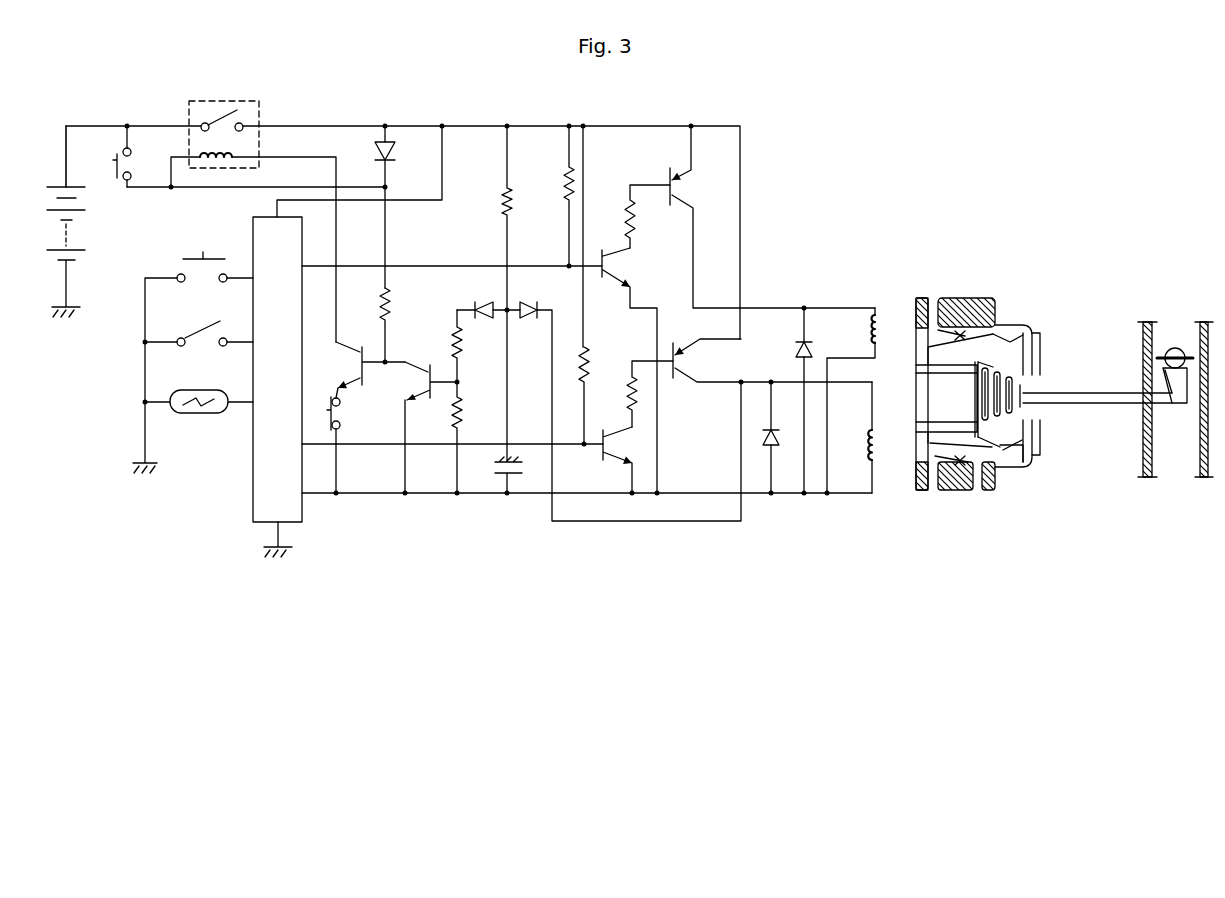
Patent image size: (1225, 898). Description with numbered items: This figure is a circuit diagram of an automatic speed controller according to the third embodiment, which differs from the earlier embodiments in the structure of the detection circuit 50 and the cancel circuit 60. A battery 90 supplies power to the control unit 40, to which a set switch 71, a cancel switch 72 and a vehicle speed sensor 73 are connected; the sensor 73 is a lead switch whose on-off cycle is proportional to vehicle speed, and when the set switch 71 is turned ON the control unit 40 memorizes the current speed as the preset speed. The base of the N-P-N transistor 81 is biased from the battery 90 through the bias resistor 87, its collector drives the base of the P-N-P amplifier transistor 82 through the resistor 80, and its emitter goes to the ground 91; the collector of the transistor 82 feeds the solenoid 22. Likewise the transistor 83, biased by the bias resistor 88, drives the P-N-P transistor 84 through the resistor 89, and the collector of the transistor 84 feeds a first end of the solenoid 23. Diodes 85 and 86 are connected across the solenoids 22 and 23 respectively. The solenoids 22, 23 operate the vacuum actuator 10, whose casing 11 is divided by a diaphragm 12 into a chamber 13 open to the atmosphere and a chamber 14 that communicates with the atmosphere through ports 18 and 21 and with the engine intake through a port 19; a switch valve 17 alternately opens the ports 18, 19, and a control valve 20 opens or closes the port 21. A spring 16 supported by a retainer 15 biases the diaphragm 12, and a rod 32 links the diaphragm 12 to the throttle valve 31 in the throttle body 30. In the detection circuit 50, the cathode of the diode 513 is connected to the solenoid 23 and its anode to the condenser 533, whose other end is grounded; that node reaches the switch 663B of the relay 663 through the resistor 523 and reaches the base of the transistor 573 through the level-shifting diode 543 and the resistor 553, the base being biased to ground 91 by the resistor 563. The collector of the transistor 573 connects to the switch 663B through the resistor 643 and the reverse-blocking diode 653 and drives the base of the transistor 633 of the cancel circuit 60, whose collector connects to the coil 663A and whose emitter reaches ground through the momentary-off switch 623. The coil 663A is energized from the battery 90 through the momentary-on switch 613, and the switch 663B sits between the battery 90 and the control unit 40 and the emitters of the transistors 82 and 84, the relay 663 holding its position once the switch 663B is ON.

The actuator 10 is at (1031, 383).
The casing 11 is at (1018, 325).
The diaphragm 12 is at (1030, 452).
The chamber 13 is at (1038, 340).
The chamber 14 is at (1003, 452).
The retainer 15 is at (973, 393).
The spring 16 is at (1000, 418).
The switch valve 17 is at (992, 492).
The port 18 is at (930, 492).
The port 19 is at (976, 492).
The control valve 20 is at (912, 355).
The port 21 is at (935, 298).
The solenoid 22 is at (882, 320).
The solenoid 23 is at (890, 455).
The throttle body 30 is at (1205, 452).
The throttle valve 31 is at (1172, 346).
The rod 32 is at (1115, 405).
The control unit 40 is at (252, 495).
The detection circuit 50 is at (478, 509).
The cancel circuit 60 is at (320, 99).
The set switch 71 is at (192, 257).
The cancel switch 72 is at (196, 330).
The vehicle speed sensor 73 is at (187, 413).
The resistor 80 is at (628, 205).
The N-P-N type transistor 81 is at (613, 288).
The P-N-P type transistor 82 is at (683, 208).
The N-P-N type transistor 83 is at (615, 456).
The P-N-P type transistor 84 is at (694, 385).
The diode 85 is at (812, 352).
The diode 86 is at (767, 450).
The bias resistor 87 is at (563, 175).
The bias resistor 88 is at (588, 352).
The resistor 89 is at (626, 377).
The battery 90 is at (78, 236).
The ground 91 is at (430, 497).
The diode 513 is at (542, 306).
The resistor 523 is at (500, 190).
The condenser 533 is at (500, 480).
The diode 543 is at (473, 306).
The resistor 553 is at (462, 347).
The resistor 563 is at (462, 422).
The N-P-N type transistor 573 is at (425, 370).
The momentary-on switch 613 is at (112, 172).
The momentary-off switch 623 is at (345, 410).
The N-P-N type transistor 633 is at (350, 353).
The resistor 643 is at (392, 287).
The diode 653 is at (388, 140).
The relay 663 is at (253, 199).
The coil 663A is at (238, 150).
The switch 663B is at (215, 120).